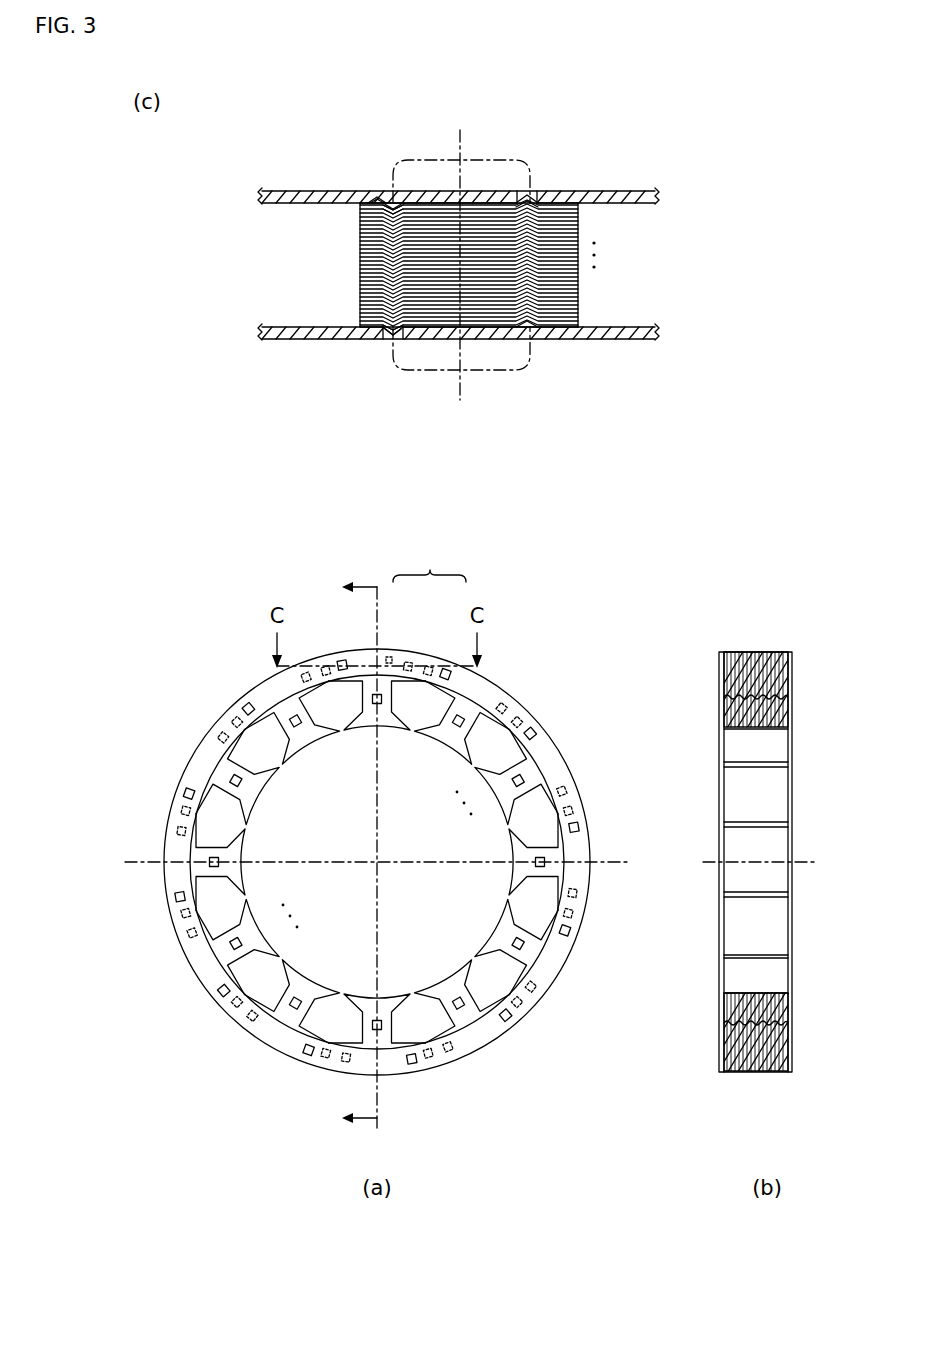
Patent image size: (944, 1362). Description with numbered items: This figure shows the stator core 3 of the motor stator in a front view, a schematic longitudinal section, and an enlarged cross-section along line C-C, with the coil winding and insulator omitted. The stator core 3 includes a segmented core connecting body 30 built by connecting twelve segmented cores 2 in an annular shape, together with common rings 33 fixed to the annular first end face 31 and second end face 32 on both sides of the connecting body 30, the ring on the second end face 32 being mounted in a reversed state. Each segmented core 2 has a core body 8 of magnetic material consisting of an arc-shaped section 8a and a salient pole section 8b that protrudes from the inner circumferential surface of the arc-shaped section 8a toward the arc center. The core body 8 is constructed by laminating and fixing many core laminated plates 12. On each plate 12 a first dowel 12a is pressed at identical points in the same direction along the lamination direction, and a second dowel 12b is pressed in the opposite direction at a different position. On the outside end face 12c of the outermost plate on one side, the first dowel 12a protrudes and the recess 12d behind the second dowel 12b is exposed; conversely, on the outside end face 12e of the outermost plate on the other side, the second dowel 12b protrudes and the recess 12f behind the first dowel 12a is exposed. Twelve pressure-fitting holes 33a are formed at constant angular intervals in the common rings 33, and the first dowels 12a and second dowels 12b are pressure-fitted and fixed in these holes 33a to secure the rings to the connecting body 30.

The segmented core 2 is at (528, 593).
The stator core 3 is at (172, 735).
The core body 8 is at (345, 266).
The arc-shaped section 8a is at (388, 660).
The salient pole section 8b is at (388, 690).
The core laminated plate 12 is at (568, 300).
The first dowel 12a is at (387, 296).
The second dowel 12b is at (531, 205).
The outside end face of first core laminated plate 12c is at (549, 676).
The recess 12d is at (528, 334).
The outside end face of second core laminated plate 12e is at (593, 396).
The recess 12f is at (393, 208).
The segmented core connecting body 30 is at (165, 791).
The first end face 31 is at (493, 524).
The second end face 32 is at (823, 686).
The common ring 33 is at (627, 188).
The pressure-fitting hole 33a is at (538, 201).